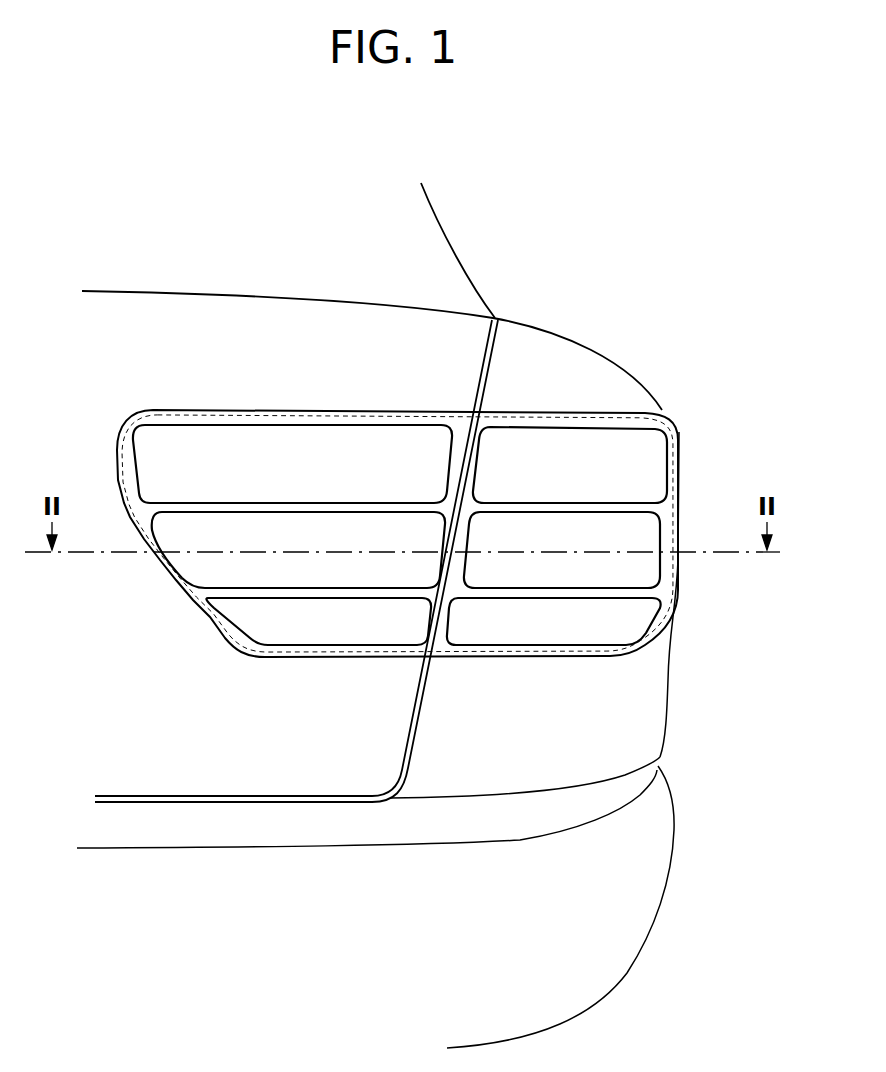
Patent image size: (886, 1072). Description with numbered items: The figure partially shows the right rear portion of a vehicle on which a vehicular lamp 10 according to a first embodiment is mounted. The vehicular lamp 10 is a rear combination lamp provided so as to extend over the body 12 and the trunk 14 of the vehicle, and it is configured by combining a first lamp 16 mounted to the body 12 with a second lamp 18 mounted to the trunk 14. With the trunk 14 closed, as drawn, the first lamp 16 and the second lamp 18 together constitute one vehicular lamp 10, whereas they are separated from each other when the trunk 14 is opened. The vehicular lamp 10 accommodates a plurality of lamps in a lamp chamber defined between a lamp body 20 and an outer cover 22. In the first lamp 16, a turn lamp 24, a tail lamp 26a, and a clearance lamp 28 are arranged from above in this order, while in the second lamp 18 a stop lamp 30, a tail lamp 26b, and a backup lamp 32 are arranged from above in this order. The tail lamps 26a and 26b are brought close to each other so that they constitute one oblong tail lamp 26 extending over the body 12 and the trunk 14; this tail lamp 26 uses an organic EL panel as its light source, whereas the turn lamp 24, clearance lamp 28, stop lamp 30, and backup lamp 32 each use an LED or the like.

The vehicular lamp 10 is at (660, 413).
The body 12 is at (633, 380).
The trunk 14 is at (453, 335).
The first lamp 16 is at (675, 433).
The second lamp 18 is at (232, 418).
The lamp body 20 is at (597, 417).
The outer cover 22 is at (540, 410).
The turn lamp 24 is at (655, 460).
The tail lamp 26 is at (408, 540).
The tail lamp 26a is at (657, 528).
The tail lamp 26b is at (153, 525).
The clearance lamp 28 is at (652, 617).
The stop lamp 30 is at (140, 463).
The backup lamp 32 is at (228, 622).